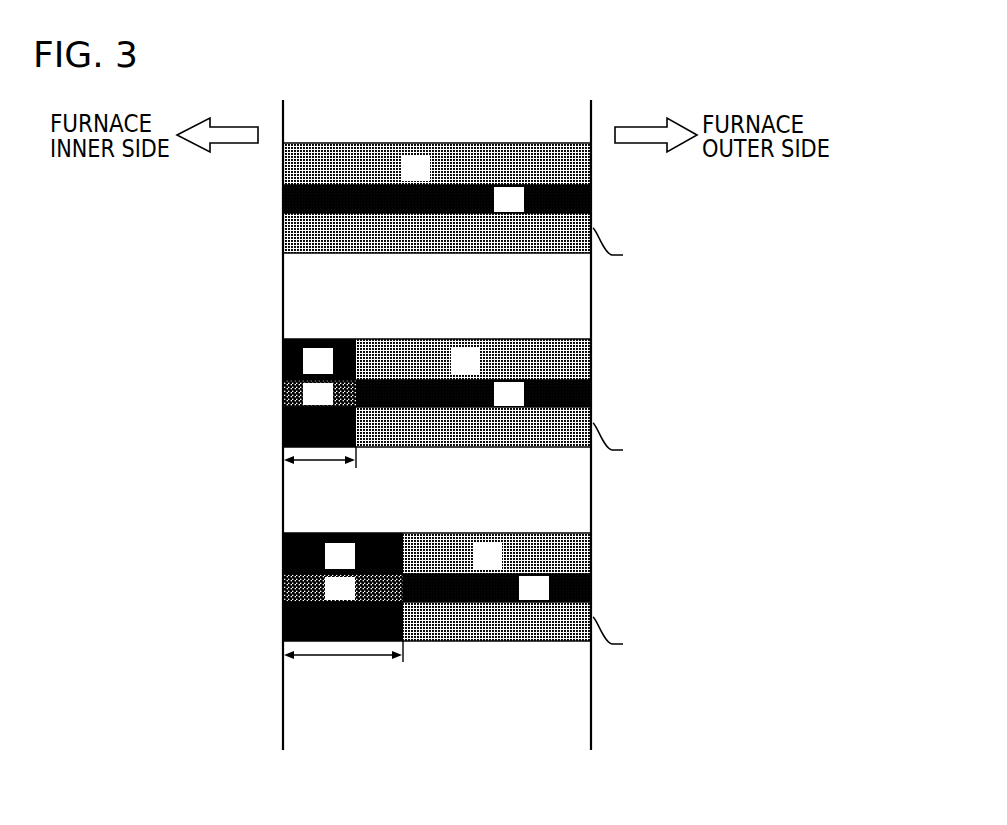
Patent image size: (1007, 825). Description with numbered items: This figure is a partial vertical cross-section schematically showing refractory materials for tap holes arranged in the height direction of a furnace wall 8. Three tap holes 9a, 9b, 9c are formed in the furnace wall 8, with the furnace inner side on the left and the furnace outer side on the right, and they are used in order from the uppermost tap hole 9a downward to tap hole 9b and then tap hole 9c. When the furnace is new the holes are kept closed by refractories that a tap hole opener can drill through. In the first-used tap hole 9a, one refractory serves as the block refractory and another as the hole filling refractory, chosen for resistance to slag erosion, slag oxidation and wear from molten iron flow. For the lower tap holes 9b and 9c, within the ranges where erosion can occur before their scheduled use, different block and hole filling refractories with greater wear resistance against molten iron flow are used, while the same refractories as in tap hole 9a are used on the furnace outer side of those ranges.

The furnace wall 8 is at (437, 112).
The tap hole 9a is at (607, 198).
The tap hole 9b is at (607, 393).
The tap hole 9c is at (607, 588).